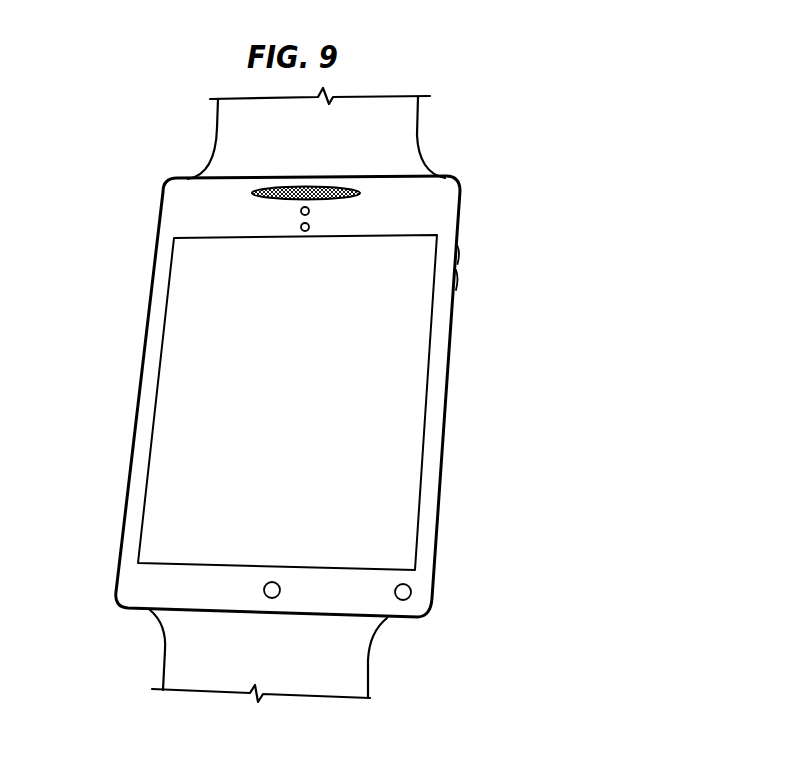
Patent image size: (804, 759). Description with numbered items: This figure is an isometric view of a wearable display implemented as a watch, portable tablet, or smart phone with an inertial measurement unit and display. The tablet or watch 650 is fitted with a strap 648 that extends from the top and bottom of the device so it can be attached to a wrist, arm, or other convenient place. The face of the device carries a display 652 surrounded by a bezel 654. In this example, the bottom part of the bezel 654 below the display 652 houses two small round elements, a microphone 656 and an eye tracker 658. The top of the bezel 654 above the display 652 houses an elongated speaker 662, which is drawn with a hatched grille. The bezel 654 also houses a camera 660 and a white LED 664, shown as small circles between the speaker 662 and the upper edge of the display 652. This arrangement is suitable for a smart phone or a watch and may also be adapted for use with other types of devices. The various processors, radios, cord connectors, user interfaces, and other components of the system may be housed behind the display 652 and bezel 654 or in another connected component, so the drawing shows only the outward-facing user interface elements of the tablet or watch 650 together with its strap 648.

The strap 648 is at (398, 128).
The tablet or watch 650 is at (269, 395).
The display 652 is at (302, 487).
The bezel 654 is at (430, 442).
The microphone 656 is at (270, 599).
The eye tracker 658 is at (411, 592).
The camera 660 is at (305, 231).
The speaker 662 is at (317, 187).
The white LED 664 is at (310, 211).